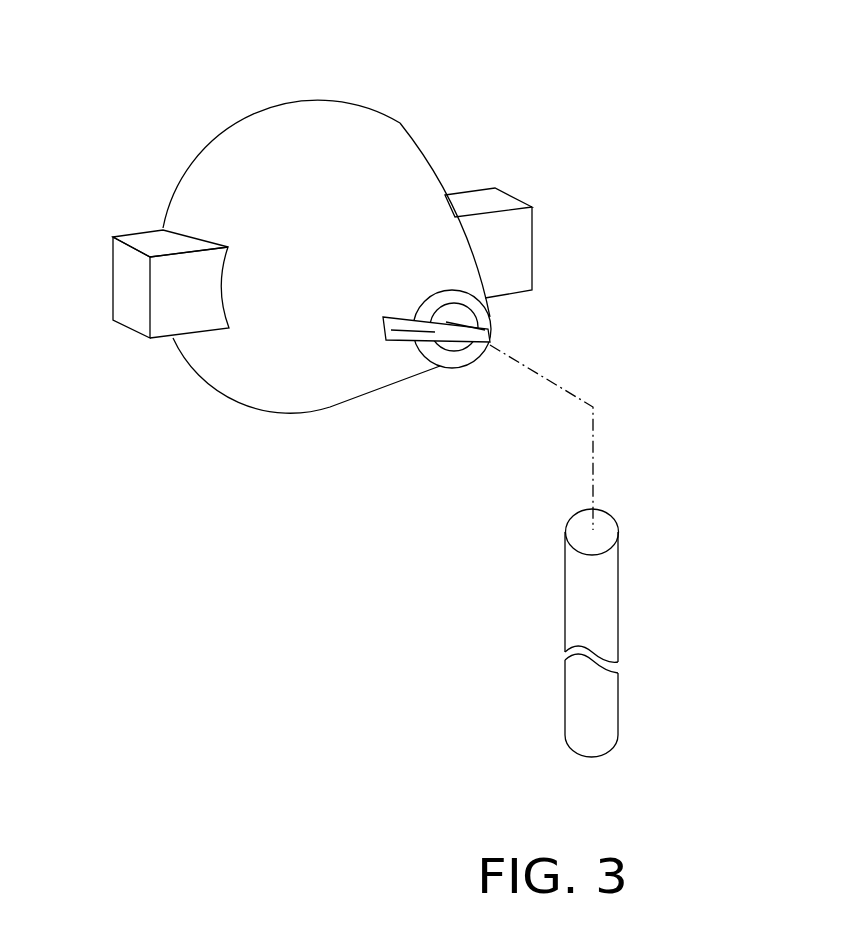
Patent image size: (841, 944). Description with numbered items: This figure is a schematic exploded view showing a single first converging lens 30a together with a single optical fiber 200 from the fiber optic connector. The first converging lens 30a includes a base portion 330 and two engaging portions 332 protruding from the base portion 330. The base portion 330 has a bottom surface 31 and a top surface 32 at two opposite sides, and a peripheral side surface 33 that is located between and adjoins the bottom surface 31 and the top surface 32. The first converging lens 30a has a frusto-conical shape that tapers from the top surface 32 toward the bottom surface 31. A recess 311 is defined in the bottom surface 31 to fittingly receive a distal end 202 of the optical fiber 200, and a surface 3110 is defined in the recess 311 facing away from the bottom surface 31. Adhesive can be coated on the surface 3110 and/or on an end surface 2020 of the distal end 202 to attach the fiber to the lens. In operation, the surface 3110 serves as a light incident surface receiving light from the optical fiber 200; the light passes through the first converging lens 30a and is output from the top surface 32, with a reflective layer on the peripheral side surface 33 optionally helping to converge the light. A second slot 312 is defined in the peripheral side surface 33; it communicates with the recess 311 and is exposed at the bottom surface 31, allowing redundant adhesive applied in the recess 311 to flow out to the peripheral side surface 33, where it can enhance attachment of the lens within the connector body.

The first converging lens 30a is at (372, 253).
The top surface 32 is at (335, 95).
The peripheral side surface 33 is at (331, 221).
The base portion 330 is at (230, 367).
The engaging portions 332 is at (512, 245).
The bottom surface 31 is at (383, 384).
The recess 311 is at (455, 352).
The second slot 312 is at (368, 397).
The surface 3110 is at (380, 330).
The optical fiber 200 is at (675, 613).
The distal end 202 is at (607, 577).
The end surface 2020 is at (602, 523).